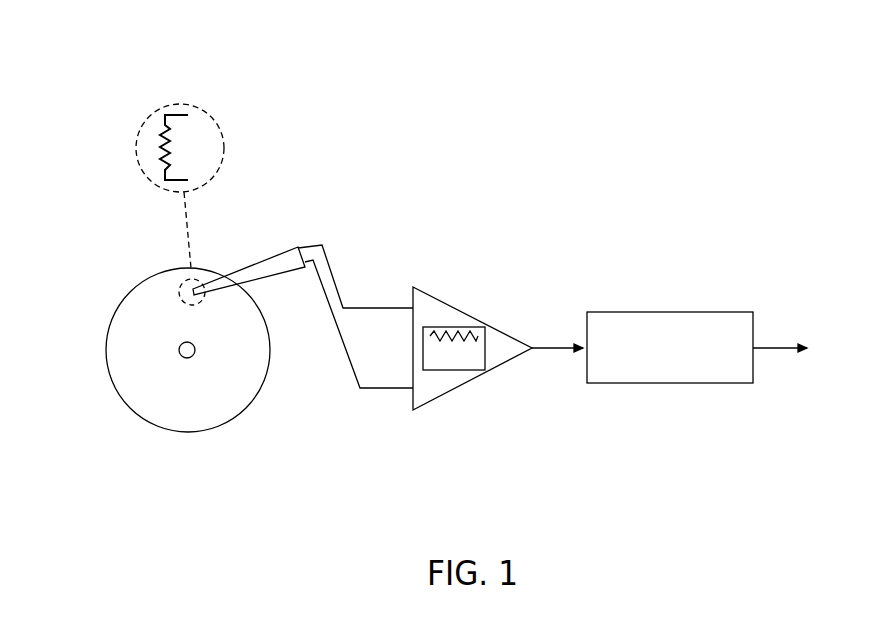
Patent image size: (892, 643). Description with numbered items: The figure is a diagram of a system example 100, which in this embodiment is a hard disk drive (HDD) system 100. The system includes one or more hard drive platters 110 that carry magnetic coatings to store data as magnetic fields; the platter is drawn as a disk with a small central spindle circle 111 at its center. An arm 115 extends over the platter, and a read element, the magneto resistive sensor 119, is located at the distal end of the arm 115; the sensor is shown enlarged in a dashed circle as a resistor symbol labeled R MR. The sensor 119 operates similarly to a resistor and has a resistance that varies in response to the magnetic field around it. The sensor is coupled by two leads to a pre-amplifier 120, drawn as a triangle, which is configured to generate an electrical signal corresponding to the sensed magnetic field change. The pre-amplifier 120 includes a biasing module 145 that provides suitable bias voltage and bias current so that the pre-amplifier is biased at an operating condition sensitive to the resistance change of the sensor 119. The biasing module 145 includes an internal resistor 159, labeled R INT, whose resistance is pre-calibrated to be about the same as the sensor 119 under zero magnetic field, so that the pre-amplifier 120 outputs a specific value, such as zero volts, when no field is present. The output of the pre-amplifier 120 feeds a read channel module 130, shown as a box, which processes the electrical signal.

The hard disk drive system 100 is at (398, 70).
The magneto resistive sensor 119 is at (160, 148).
The hard drive platter 110 is at (264, 395).
The spindle 111 is at (196, 350).
The arm 115 is at (280, 247).
The pre-amplifier 120 is at (510, 358).
The biasing module 145 is at (515, 369).
The internal resistor 159 is at (462, 328).
The read channel module 130 is at (697, 347).